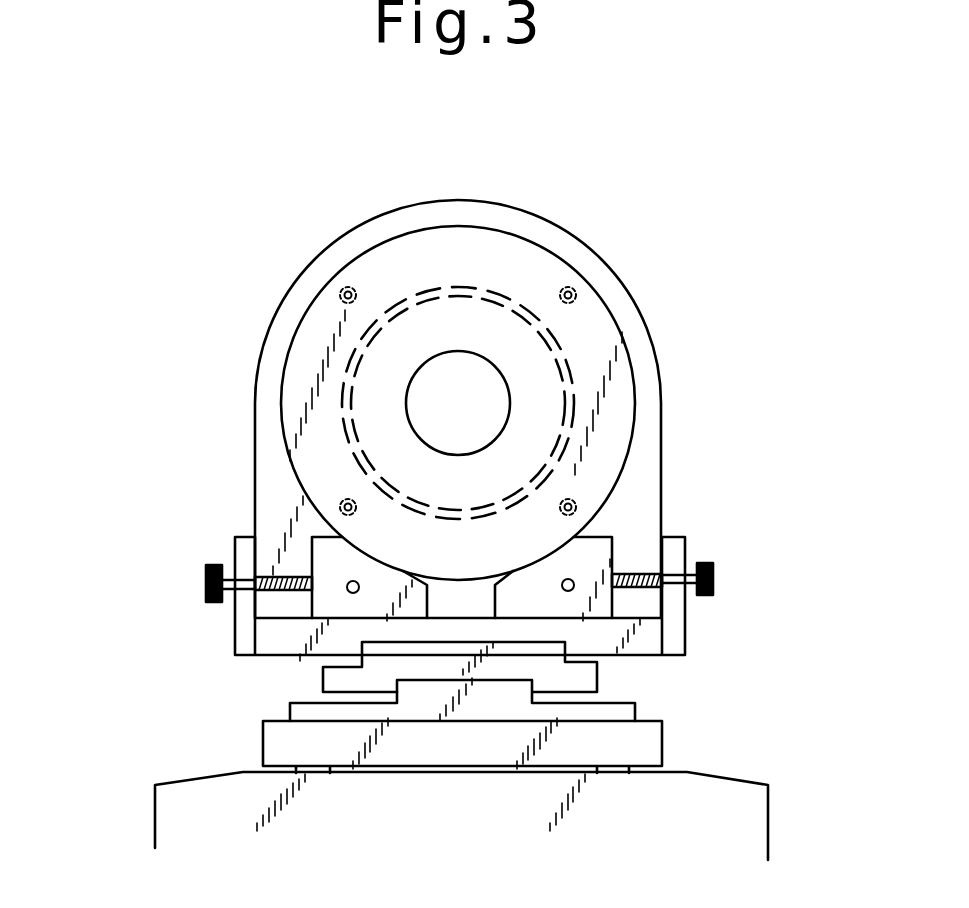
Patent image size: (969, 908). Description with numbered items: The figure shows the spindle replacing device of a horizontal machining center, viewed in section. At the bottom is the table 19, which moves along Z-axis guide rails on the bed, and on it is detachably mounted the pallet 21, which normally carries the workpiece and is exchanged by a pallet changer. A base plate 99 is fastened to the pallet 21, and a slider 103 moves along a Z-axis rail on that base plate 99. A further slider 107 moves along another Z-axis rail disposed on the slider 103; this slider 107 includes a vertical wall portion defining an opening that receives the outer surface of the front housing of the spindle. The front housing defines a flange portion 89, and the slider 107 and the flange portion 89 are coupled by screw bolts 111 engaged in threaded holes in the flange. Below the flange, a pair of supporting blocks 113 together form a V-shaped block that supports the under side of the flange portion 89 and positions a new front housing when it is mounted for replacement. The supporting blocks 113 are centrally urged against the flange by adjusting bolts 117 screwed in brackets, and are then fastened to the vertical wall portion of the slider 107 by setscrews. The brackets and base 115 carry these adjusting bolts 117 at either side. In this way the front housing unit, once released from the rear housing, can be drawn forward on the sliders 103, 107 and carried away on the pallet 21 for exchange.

The table 19 is at (173, 823).
The pallet 21 is at (278, 750).
The flange portion 89 is at (523, 263).
The base plate 99 is at (617, 708).
The slider 103 is at (585, 672).
The slider 107 is at (295, 300).
The screw bolts 111 is at (576, 290).
The supporting blocks 113 is at (590, 548).
The base plate with brackets 115 is at (672, 630).
The adjusting bolts 117 is at (713, 578).